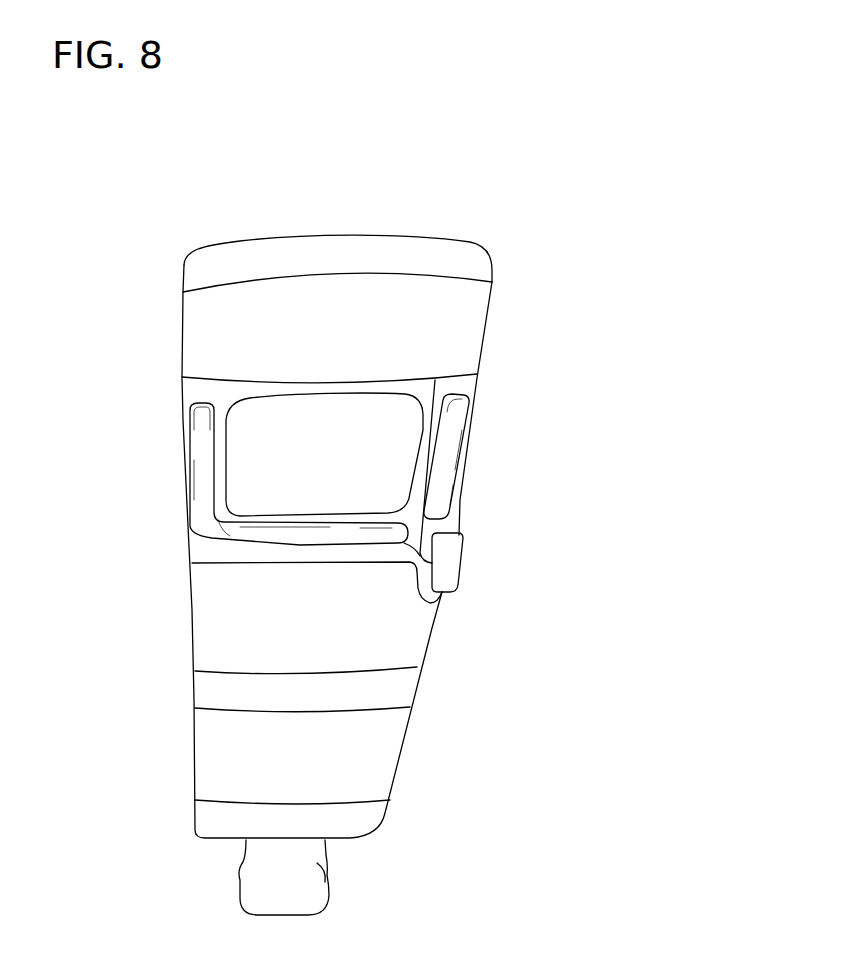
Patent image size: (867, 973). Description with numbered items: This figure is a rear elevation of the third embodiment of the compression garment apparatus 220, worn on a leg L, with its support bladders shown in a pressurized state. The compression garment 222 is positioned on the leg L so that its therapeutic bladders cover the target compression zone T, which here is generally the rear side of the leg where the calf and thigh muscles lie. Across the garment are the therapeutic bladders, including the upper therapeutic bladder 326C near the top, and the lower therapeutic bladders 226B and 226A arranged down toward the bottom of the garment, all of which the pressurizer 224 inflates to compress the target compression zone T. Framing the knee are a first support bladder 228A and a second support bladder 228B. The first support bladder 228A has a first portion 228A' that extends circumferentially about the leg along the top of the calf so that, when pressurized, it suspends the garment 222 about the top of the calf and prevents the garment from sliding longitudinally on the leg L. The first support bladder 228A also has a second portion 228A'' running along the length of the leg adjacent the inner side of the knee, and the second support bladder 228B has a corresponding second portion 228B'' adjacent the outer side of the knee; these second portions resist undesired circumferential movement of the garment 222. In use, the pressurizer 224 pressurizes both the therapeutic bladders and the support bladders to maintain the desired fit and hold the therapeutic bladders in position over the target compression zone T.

The compression garment apparatus 220 is at (585, 216).
The compression garment 222 is at (450, 231).
The therapeutic bladder 326C is at (490, 312).
The first support bladder 228A is at (237, 488).
The second portion of first support bladder 228A'' is at (135, 453).
The first portion of first support bladder 228A' is at (220, 564).
The second support bladder 228B is at (514, 456).
The second portion of second support bladder 228B'' is at (523, 452).
The pressurizer 224 is at (479, 546).
The therapeutic bladder 226B is at (418, 640).
The therapeutic bladder 226A is at (387, 760).
The target compression zone T is at (147, 629).
The leg L is at (603, 609).